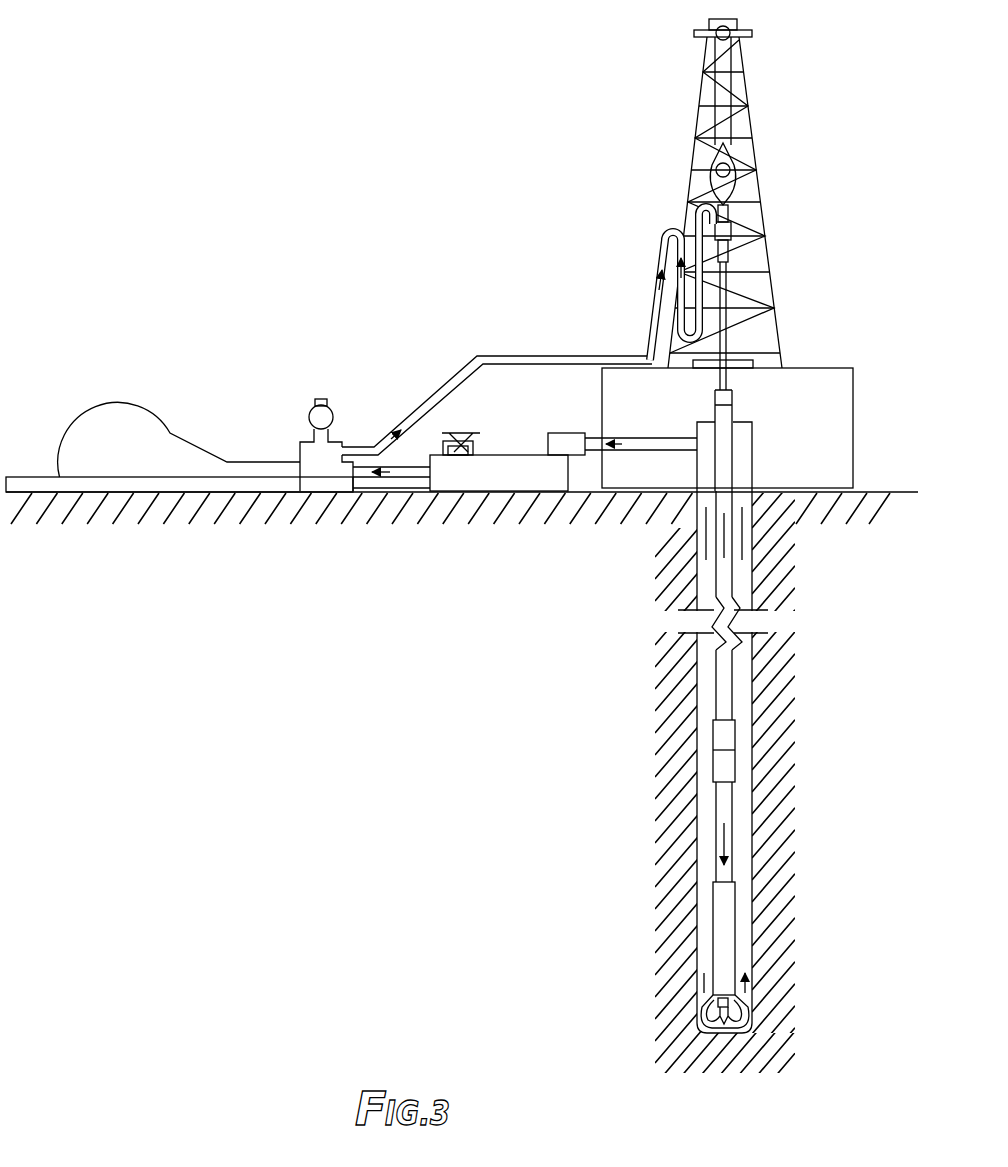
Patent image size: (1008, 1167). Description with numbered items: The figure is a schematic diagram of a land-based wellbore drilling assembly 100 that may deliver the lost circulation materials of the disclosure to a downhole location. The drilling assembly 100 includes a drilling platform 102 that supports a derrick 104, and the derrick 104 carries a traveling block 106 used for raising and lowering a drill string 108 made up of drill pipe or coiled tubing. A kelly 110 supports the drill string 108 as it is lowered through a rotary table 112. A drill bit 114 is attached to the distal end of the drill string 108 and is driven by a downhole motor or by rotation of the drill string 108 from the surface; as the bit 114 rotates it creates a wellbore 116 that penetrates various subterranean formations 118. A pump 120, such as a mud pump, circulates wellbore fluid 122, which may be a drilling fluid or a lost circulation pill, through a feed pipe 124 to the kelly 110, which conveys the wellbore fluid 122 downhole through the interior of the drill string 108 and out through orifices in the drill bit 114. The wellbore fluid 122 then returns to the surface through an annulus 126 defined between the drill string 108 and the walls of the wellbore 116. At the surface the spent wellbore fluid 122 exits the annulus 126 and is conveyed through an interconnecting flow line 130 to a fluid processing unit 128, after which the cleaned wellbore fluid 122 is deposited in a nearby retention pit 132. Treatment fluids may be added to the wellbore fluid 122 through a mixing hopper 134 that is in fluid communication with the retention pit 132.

The wellbore drilling assembly 100 is at (465, 593).
The drilling platform 102 is at (853, 380).
The derrick 104 is at (755, 118).
The traveling block 106 is at (737, 157).
The drill string 108 is at (745, 602).
The kelly 110 is at (725, 283).
The rotary table 112 is at (753, 365).
The drill bit 114 is at (737, 1010).
The wellbore 116 is at (752, 683).
The subterranean formations 118 is at (625, 727).
The pump 120 is at (141, 458).
The wellbore fluid 122 is at (368, 453).
The feed pipe 124 is at (480, 352).
The annulus 126 is at (740, 836).
The fluid processing unit 128 is at (562, 434).
The flow line 130 is at (683, 450).
The retention pit 132 is at (550, 480).
The mixing hopper 134 is at (447, 455).